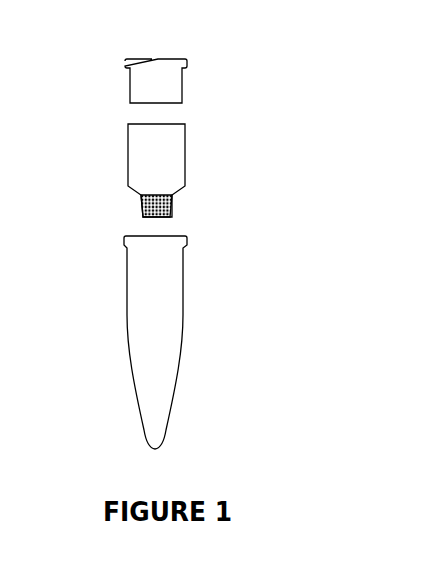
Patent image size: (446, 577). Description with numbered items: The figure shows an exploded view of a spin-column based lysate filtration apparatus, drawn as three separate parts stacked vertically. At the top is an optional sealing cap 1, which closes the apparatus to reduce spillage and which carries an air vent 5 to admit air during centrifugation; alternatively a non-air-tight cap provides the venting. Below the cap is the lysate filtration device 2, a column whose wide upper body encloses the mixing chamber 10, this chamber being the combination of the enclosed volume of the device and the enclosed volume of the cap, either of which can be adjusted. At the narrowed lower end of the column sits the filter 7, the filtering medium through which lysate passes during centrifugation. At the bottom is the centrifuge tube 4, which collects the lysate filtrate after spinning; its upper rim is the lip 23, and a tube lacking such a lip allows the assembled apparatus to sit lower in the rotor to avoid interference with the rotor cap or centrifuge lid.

The sealing cap 1 is at (182, 83).
The air vent 5 is at (222, 51).
The lysate filtration device 2 is at (185, 171).
The mixing chamber 10 is at (158, 136).
The filter 7 is at (170, 206).
The centrifuge tube 4 is at (183, 313).
The lip 23 is at (187, 244).